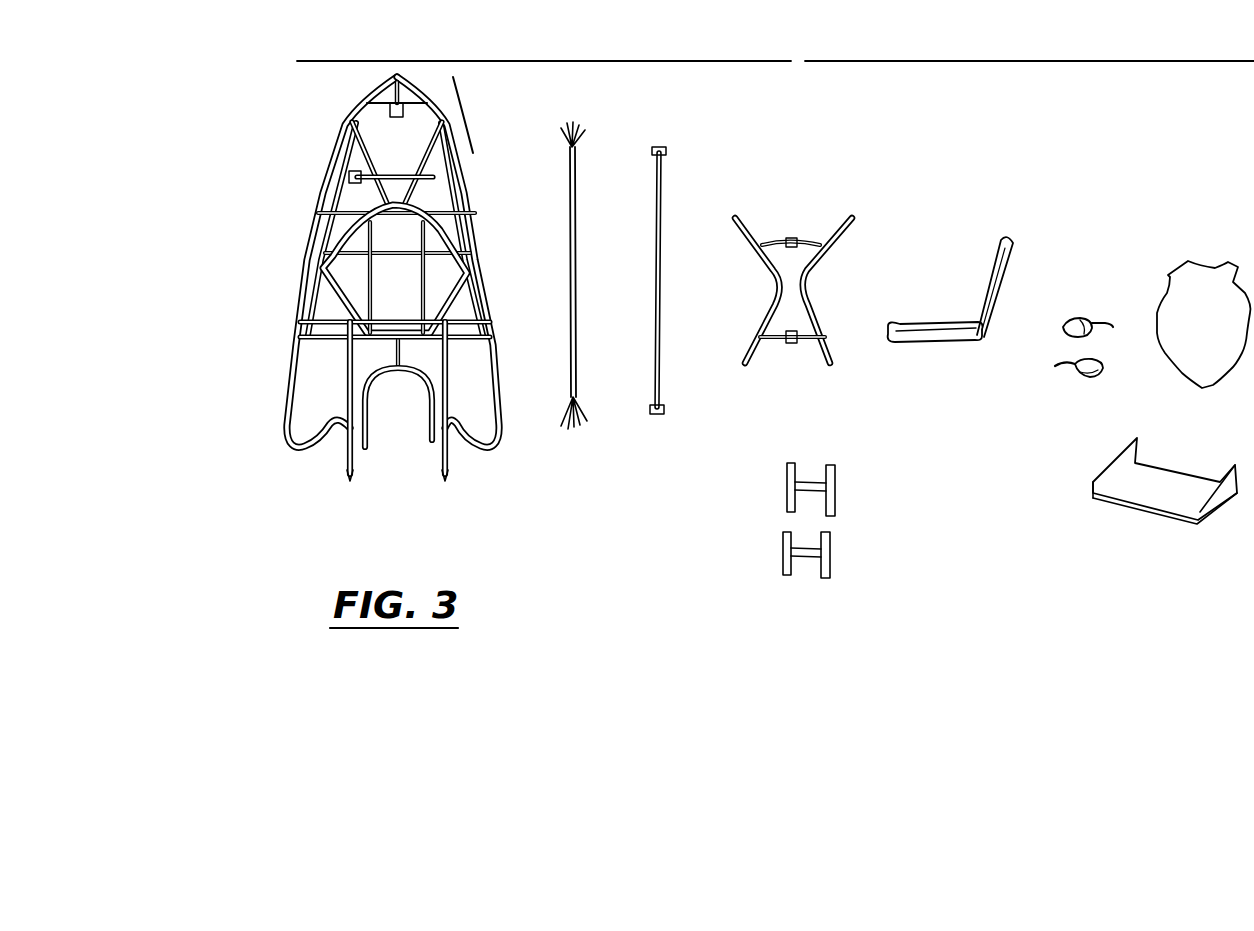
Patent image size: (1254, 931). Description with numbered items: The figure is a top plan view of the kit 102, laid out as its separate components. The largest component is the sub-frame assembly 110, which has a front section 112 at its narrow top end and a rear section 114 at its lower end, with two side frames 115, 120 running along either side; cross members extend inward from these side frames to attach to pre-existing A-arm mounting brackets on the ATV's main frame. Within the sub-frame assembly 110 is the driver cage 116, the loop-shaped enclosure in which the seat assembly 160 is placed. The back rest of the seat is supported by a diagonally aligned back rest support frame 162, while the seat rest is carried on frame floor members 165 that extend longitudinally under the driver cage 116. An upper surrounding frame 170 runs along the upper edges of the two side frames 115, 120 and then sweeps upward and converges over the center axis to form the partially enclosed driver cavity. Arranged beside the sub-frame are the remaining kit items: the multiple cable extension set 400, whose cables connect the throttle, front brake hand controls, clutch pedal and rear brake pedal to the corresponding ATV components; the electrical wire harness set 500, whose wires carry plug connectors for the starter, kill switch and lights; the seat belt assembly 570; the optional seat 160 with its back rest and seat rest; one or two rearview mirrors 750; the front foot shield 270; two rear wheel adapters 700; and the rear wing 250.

The kit 102 is at (803, 61).
The sub-frame assembly 110 is at (338, 119).
The front section 112 is at (470, 121).
The rear section 114 is at (258, 278).
The side frame 115 is at (470, 212).
The driver cage 116 is at (357, 275).
The side frame 120 is at (318, 216).
The seat assembly 160 is at (990, 229).
The back rest support frame 162 is at (410, 330).
The frame floor members 165 is at (373, 287).
The upper surrounding frame 170 is at (428, 313).
The rear wing 250 is at (1092, 483).
The front foot shield 270 is at (1217, 263).
The multiple cable extension set 400 is at (578, 160).
The electrical wire harness set 500 is at (665, 177).
The seat belt assembly 570 is at (809, 220).
The rear wheel adapters 700 is at (768, 515).
The rearview mirrors 750 is at (1098, 302).